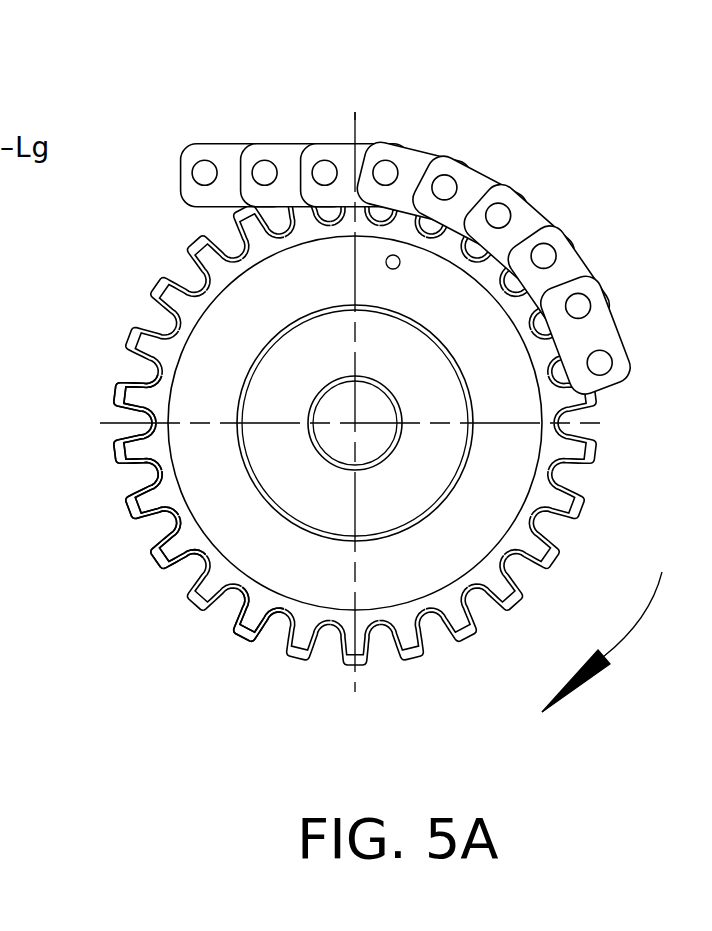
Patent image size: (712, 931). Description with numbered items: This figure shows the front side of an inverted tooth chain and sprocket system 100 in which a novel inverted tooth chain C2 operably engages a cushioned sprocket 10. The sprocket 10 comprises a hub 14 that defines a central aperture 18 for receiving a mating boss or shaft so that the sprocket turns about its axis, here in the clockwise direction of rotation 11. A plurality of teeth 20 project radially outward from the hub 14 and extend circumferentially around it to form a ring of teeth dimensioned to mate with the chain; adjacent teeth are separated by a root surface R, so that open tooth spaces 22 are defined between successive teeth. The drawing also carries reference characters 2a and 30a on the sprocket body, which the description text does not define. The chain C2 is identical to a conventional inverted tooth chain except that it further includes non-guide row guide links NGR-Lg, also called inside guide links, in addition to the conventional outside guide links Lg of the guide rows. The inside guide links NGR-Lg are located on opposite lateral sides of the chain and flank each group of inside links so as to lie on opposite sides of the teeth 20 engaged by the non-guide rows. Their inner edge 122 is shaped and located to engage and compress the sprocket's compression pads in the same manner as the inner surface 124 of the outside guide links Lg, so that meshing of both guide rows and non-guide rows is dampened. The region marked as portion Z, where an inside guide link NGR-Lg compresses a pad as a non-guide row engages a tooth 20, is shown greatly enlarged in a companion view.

The sprocket 10 is at (200, 366).
The clockwise direction of rotation 11 is at (633, 613).
The hub 14 is at (487, 287).
The central aperture 18 is at (378, 392).
The teeth 20 is at (150, 508).
The tooth spaces 22 is at (141, 539).
The tooth pitch 2a is at (143, 460).
The hub 30a is at (229, 280).
The inverted tooth chain and sprocket system 100 is at (108, 282).
The inner edge of inside guide links 122 is at (217, 207).
The inner surface of outside guide links 124 is at (262, 205).
The root surface R is at (240, 597).
The portion Z is at (321, 167).
The guide links Lg is at (533, 217).
The non-guide row guide links NGR-Lg is at (197, 142).
The inverted tooth chain C2 is at (474, 148).